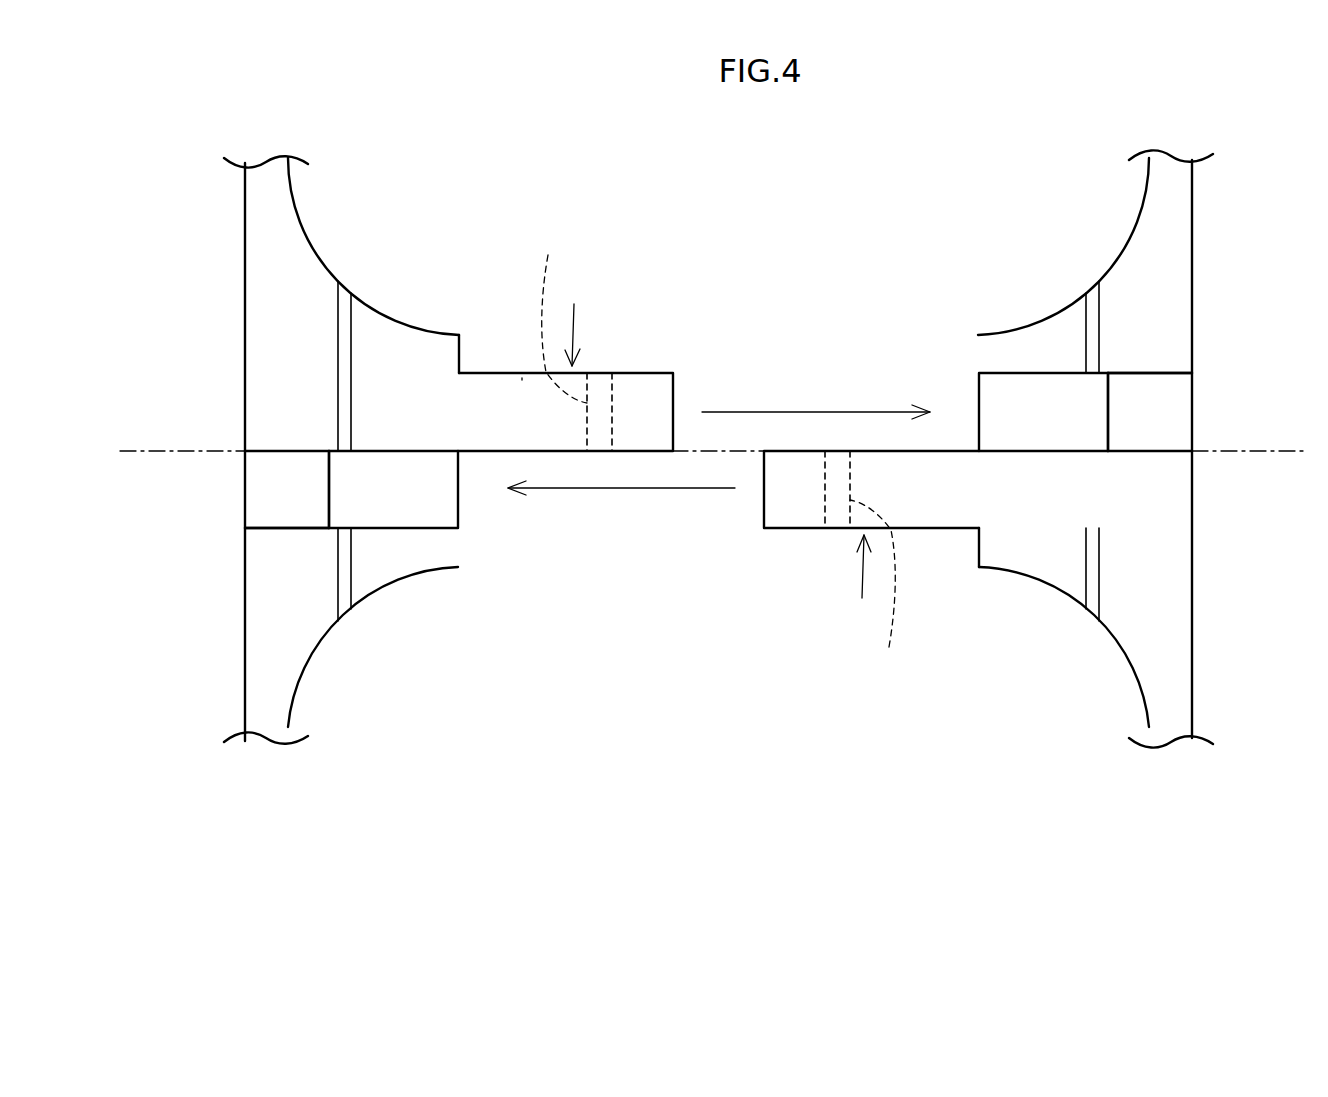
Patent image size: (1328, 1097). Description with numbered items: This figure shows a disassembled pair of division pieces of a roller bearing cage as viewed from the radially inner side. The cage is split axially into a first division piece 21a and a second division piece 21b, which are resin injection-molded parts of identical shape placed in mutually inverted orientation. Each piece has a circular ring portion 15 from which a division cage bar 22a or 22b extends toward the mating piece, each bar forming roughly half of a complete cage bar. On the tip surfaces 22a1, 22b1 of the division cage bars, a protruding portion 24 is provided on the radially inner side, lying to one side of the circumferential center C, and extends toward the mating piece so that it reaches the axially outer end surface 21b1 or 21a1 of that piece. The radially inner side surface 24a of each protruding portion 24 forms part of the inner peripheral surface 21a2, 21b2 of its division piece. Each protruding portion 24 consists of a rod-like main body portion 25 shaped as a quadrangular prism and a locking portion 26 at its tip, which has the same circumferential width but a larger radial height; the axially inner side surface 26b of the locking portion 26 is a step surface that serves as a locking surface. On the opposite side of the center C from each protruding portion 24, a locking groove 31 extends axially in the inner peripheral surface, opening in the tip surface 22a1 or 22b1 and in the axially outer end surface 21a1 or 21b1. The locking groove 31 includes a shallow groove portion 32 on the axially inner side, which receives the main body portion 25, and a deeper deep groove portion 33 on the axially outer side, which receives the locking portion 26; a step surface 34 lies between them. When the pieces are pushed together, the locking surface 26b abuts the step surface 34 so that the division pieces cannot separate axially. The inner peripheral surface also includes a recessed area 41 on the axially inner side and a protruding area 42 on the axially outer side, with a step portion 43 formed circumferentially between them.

The center C is at (157, 448).
The circular ring portion 15 is at (252, 204).
The first division piece 21a is at (639, 449).
The axially outer end surface 21a1 is at (244, 630).
The inner peripheral surface 21a2 is at (641, 449).
The second division piece 21b is at (1032, 442).
The axially outer end surface 21b1 is at (1192, 553).
The inner peripheral surface 21b2 is at (1128, 507).
The division cage bar 22a is at (679, 410).
The tip surface 22a1 is at (458, 347).
The division cage bar 22b is at (901, 572).
The tip surface 22b1 is at (978, 560).
The protruding portion 24 is at (718, 451).
The radially inner side surface 24a is at (488, 388).
The main body portion 25 is at (522, 378).
The locking portion 26 is at (625, 390).
The locking surface 26b is at (718, 452).
The locking groove 31 is at (717, 453).
The shallow groove portion 32 is at (405, 512).
The deep groove portion 33 is at (260, 488).
The step surface 34 is at (327, 505).
The recessed area 41 is at (386, 340).
The protruding area 42 is at (287, 253).
The step portion 43 is at (342, 297).